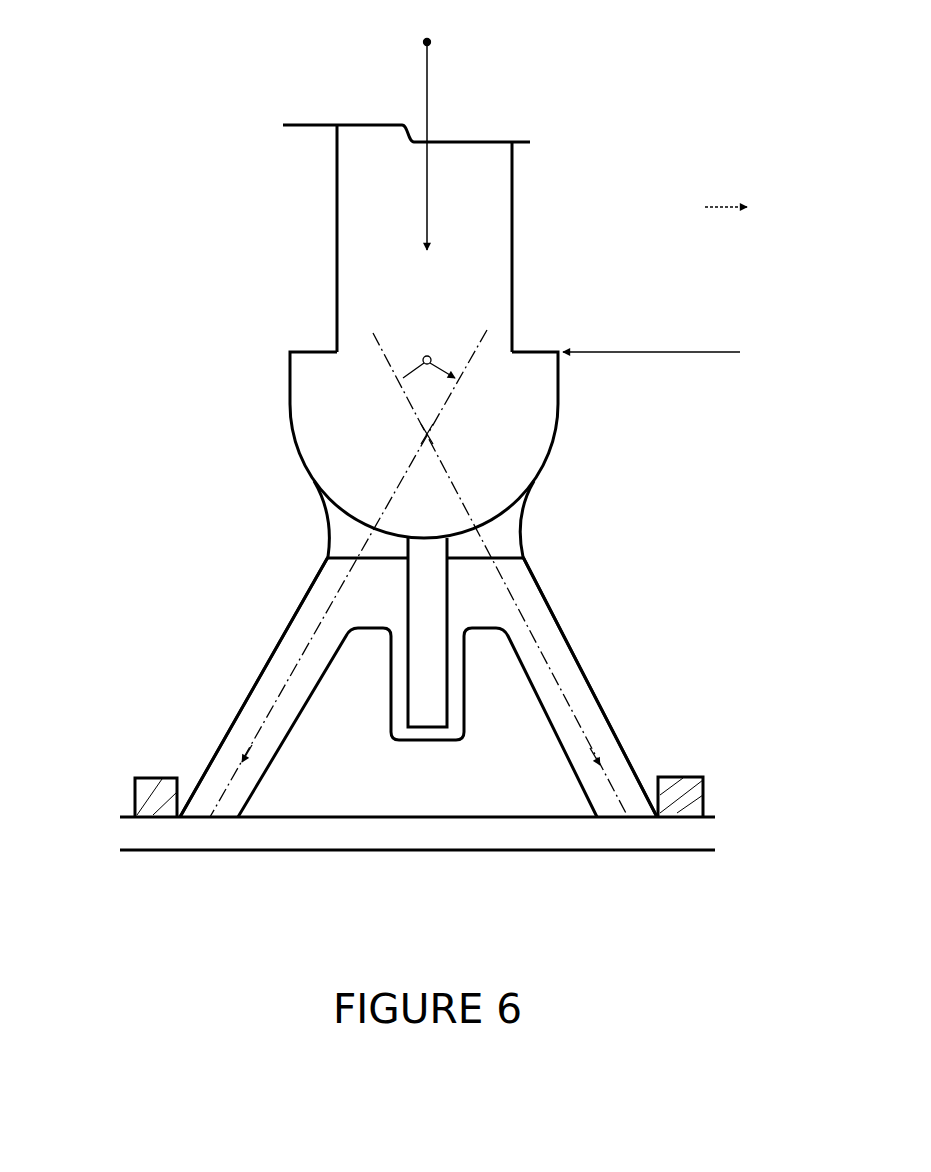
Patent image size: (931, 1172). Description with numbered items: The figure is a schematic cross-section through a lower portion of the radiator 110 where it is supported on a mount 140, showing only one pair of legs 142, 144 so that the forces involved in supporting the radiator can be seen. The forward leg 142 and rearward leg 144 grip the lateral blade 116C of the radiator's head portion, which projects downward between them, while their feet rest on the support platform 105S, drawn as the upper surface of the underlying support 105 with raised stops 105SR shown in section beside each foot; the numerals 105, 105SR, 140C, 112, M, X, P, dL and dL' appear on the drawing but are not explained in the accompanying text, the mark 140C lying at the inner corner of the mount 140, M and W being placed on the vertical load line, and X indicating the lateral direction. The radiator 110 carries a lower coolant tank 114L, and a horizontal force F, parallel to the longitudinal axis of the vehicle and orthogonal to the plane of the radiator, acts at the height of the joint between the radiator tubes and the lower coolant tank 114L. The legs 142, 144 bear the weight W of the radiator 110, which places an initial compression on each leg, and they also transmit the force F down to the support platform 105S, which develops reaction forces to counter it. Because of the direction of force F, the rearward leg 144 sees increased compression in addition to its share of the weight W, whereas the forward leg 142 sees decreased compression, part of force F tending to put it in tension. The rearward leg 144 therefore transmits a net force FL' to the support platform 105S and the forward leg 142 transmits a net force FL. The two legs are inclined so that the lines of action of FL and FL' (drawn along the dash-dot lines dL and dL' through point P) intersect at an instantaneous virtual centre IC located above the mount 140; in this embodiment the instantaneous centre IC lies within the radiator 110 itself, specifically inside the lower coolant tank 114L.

The radiator 110 is at (412, 513).
The upper stem / shaft 112 is at (487, 192).
The lower coolant tank 114L is at (537, 388).
The lateral blade 116C is at (415, 593).
The mount 140 is at (419, 696).
The inner cavity corner of base support 140C is at (387, 730).
The forward leg 142 is at (607, 735).
The rearward leg 144 is at (230, 733).
The substrate / surface 105 is at (417, 864).
The support platform 105S is at (402, 838).
The substrate retaining ridges 105SR is at (700, 792).
The mass / point of applied load M is at (427, 42).
The weight W is at (443, 152).
The X axis direction X is at (739, 206).
The horizontal force F is at (659, 353).
The pivot point P is at (430, 357).
The load line distance dL is at (407, 546).
The load line distance (prime) dL' is at (410, 523).
The instantaneous centre IC is at (430, 437).
The net force FL is at (668, 687).
The net force FL' is at (173, 672).